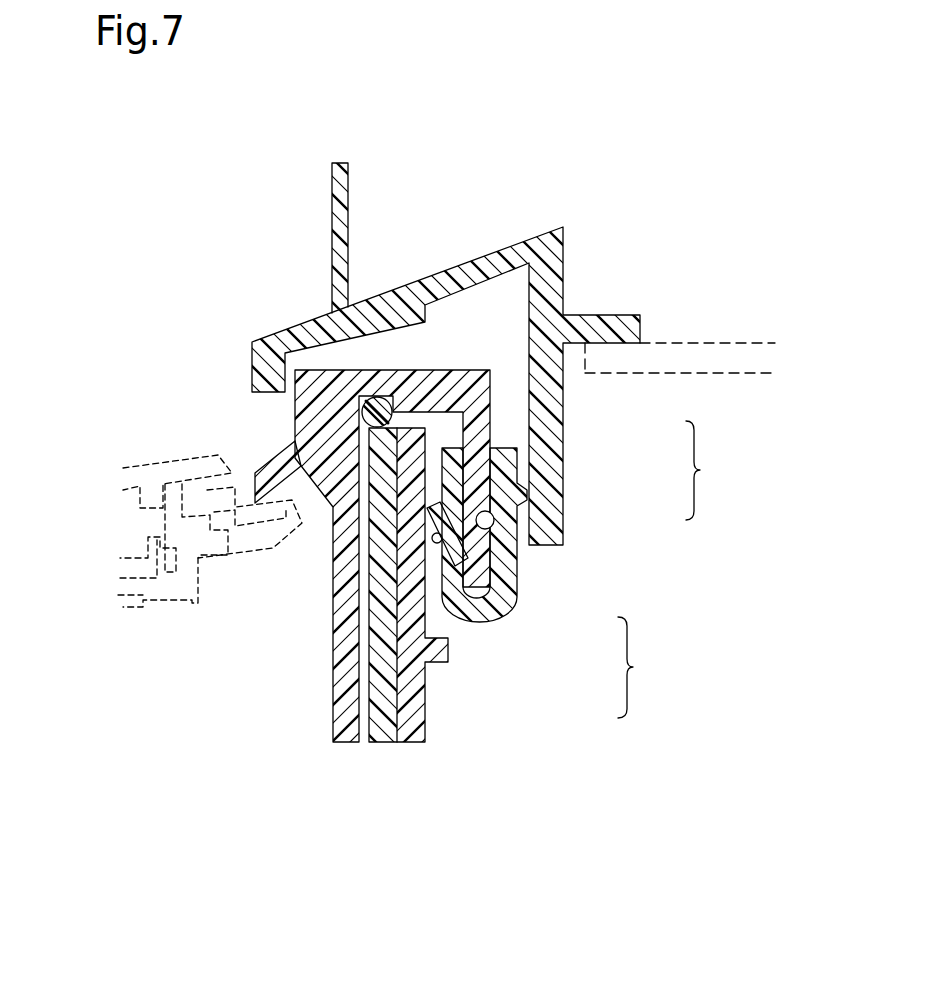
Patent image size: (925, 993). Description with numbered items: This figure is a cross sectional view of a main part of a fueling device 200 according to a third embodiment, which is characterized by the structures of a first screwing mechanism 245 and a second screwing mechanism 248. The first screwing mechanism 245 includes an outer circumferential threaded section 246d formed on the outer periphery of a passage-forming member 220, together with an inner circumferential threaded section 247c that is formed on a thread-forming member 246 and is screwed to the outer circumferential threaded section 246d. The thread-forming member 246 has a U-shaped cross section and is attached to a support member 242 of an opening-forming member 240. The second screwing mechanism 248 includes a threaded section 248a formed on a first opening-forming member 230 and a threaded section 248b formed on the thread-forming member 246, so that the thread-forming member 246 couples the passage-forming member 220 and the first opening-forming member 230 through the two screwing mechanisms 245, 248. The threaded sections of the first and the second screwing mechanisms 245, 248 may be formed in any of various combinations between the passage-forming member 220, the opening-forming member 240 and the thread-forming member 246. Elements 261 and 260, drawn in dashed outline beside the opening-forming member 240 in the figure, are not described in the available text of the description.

The fueling device 200 is at (531, 209).
The first opening-forming member 230 is at (563, 265).
The opening-forming member 240 is at (295, 430).
The support member 242 is at (493, 398).
The passage-forming member 220 is at (388, 743).
The thread-forming member 246 is at (517, 572).
The outer circumferential threaded section 246d is at (447, 573).
The inner circumferential threaded section 247c is at (510, 608).
The first screwing mechanism 245 is at (650, 667).
The second screwing mechanism 248 is at (718, 470).
The threaded section 248a is at (523, 486).
The threaded section 248b is at (517, 503).
The lever 261 is at (122, 494).
The operating member 260 is at (62, 514).